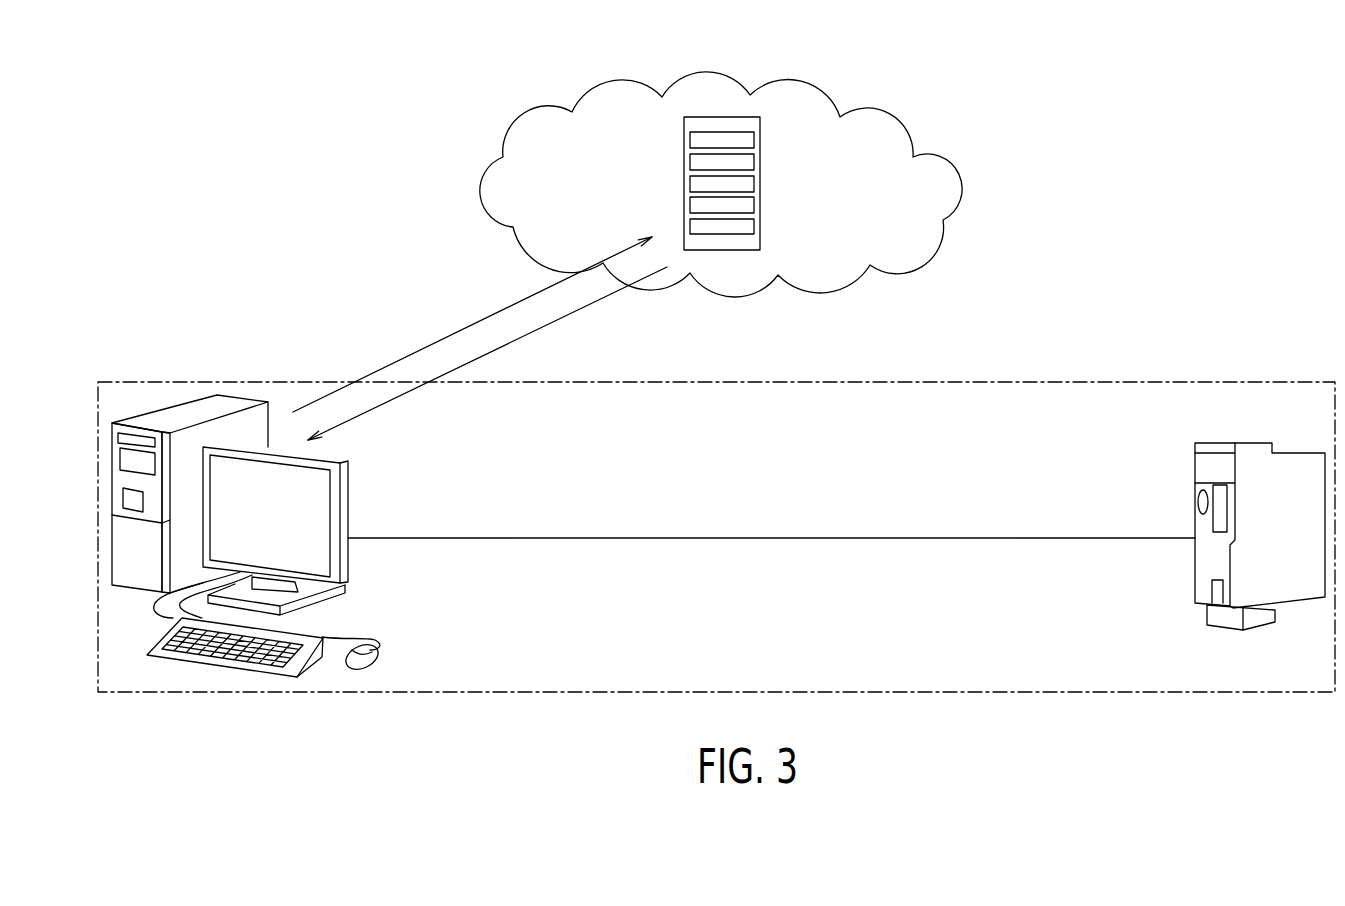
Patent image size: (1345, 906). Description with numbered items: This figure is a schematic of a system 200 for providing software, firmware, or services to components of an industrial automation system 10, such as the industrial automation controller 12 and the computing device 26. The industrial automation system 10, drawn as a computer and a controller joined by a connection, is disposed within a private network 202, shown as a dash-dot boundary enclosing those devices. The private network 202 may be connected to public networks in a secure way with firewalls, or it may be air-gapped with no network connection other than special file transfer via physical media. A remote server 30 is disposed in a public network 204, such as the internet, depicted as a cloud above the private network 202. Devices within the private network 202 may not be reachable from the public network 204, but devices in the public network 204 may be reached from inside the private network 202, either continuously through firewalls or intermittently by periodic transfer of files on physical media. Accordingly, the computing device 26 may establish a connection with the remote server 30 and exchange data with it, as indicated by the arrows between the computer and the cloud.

The system 200 is at (1098, 172).
The public network 204 is at (707, 72).
The remote server 30 is at (760, 185).
The private network 202 is at (763, 382).
The industrial automation system 10 is at (623, 648).
The computing device 26 is at (348, 497).
The industrial automation controller 12 is at (1250, 442).